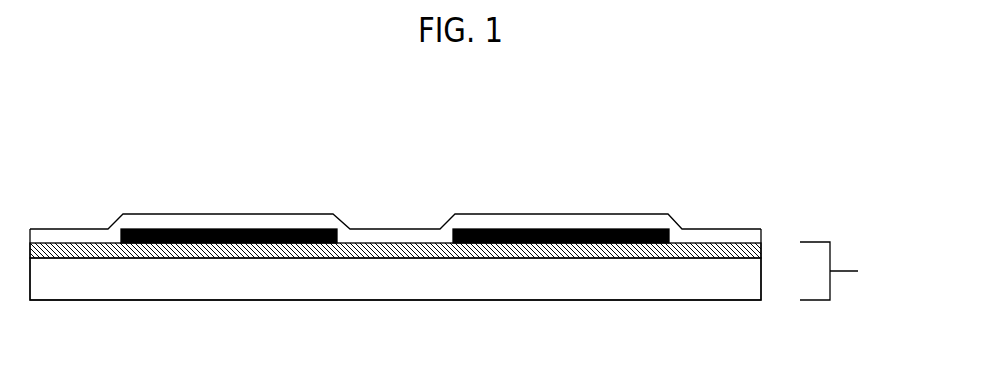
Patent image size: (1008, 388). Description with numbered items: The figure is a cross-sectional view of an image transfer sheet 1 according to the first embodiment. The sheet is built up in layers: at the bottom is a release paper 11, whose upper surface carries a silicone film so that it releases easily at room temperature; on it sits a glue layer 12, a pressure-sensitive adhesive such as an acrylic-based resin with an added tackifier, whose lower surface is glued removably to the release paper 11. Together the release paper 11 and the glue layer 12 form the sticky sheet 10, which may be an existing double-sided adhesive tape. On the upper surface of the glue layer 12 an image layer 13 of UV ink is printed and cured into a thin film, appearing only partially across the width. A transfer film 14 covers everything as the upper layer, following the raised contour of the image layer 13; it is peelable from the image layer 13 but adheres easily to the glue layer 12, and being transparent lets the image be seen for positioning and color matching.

The image transfer sheet 1 is at (98, 180).
The sticky sheet 10 is at (847, 271).
The release paper 11 is at (723, 287).
The glue layer 12 is at (725, 248).
The image layer 13 is at (296, 229).
The transfer film 14 is at (500, 222).